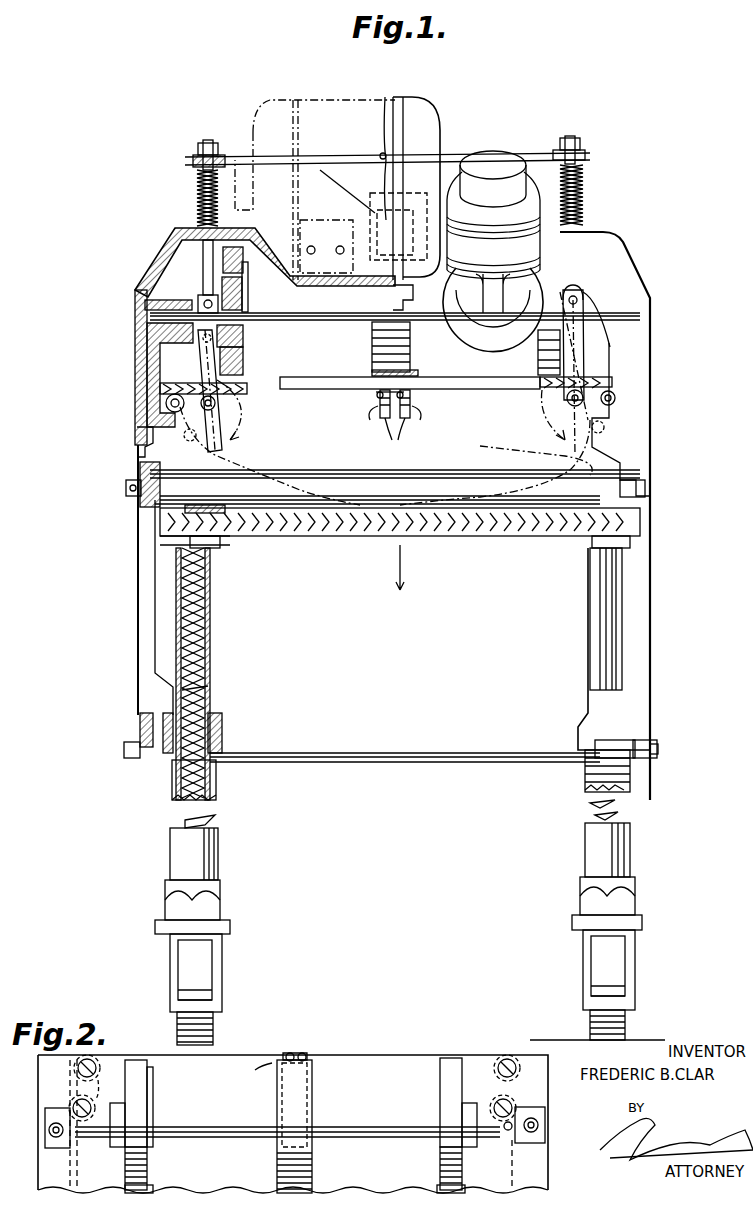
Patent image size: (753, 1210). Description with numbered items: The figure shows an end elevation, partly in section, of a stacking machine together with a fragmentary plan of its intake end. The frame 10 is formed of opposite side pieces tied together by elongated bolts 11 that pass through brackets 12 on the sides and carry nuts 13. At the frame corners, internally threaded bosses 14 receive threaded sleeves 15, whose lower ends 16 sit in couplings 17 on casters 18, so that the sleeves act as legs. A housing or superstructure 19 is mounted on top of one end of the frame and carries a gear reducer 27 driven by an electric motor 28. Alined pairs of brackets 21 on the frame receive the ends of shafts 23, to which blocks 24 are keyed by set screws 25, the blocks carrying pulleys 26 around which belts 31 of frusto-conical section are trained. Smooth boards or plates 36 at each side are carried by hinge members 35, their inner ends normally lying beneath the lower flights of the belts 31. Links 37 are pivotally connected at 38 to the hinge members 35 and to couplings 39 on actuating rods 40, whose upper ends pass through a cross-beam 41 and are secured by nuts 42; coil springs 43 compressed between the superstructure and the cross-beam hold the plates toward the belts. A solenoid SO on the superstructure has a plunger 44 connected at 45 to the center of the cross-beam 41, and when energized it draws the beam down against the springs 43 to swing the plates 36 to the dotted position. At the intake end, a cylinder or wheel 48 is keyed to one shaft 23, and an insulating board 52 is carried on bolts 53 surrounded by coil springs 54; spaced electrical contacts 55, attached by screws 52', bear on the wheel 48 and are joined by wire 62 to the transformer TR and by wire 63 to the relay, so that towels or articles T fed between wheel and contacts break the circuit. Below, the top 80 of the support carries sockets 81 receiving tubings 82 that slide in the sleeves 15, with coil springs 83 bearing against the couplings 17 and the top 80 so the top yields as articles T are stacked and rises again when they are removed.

In FIG. 1, the frame 10 is at (652, 448).
In FIG. 2, the frame 10 is at (45, 1174).
In FIG. 1, the elongated bolts 11 is at (305, 478).
In FIG. 1, the brackets 12 is at (140, 500).
In FIG. 1, the nuts 13 is at (126, 489).
In FIG. 1, the bosses 14 is at (222, 725).
In FIG. 1, the sleeves 15 is at (216, 782).
In FIG. 1, the lower ends of the sleeves 16 is at (218, 853).
In FIG. 1, the couplings 17 is at (215, 905).
In FIG. 1, the casters 18 is at (240, 942).
In FIG. 1, the superstructure 19 is at (660, 343).
In FIG. 1, the brackets 21 is at (135, 396).
In FIG. 2, the brackets 21 is at (47, 1133).
In FIG. 1, the shafts 23 is at (326, 322).
In FIG. 2, the shafts 23 is at (225, 1125).
In FIG. 1, the blocks 24 is at (243, 343).
In FIG. 1, the set screws 25 is at (203, 275).
In FIG. 1, the pulleys 26 is at (242, 285).
In FIG. 2, the pulleys 26 is at (150, 1163).
In FIG. 1, the gear reducer 27 is at (493, 251).
In FIG. 1, the electric motor 28 is at (428, 112).
In FIG. 1, the belts 31 is at (223, 255).
In FIG. 2, the belts 31 is at (147, 1103).
In FIG. 1, the hinge members 35 is at (148, 424).
In FIG. 1, the boards or plates 36 is at (240, 400).
In FIG. 2, the boards or plates 36 is at (155, 1182).
In FIG. 1, the links 37 is at (205, 360).
In FIG. 1, the pivotal connections 38 is at (214, 406).
In FIG. 1, the couplings 39 is at (583, 290).
In FIG. 1, the actuating rods 40 is at (140, 262).
In FIG. 1, the cross-beam 41 is at (283, 150).
In FIG. 1, the nuts 42 is at (198, 148).
In FIG. 1, the coil springs 43 is at (195, 203).
In FIG. 1, the plunger 44 is at (372, 198).
In FIG. 1, the connection 45 is at (380, 153).
In FIG. 1, the cylinder or wheel 48 is at (372, 344).
In FIG. 2, the cylinder or wheel 48 is at (312, 1170).
In FIG. 1, the insulating board or plate 52 is at (410, 399).
In FIG. 2, the insulating board or plate 52 is at (321, 1101).
In FIG. 1, the screws 52' is at (399, 441).
In FIG. 2, the screws 52' is at (250, 1062).
In FIG. 2, the bolts 53 is at (80, 1072).
In FIG. 2, the coil springs 54 is at (294, 1088).
In FIG. 1, the electrical contacts 55 is at (380, 392).
In FIG. 2, the electrical contacts 55 is at (303, 1052).
In FIG. 1, the wire 62 is at (374, 419).
In FIG. 1, the wire 63 is at (412, 420).
In FIG. 1, the top 80 is at (470, 540).
In FIG. 1, the sockets 81 is at (220, 540).
In FIG. 1, the pipes or tubings 82 is at (212, 630).
In FIG. 1, the coil springs 83 is at (212, 685).
In FIG. 1, the towels or articles T is at (455, 495).
In FIG. 1, the transformer TR is at (343, 215).
In FIG. 1, the solenoid SO is at (337, 190).